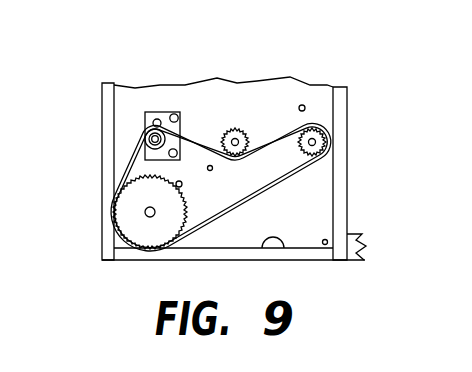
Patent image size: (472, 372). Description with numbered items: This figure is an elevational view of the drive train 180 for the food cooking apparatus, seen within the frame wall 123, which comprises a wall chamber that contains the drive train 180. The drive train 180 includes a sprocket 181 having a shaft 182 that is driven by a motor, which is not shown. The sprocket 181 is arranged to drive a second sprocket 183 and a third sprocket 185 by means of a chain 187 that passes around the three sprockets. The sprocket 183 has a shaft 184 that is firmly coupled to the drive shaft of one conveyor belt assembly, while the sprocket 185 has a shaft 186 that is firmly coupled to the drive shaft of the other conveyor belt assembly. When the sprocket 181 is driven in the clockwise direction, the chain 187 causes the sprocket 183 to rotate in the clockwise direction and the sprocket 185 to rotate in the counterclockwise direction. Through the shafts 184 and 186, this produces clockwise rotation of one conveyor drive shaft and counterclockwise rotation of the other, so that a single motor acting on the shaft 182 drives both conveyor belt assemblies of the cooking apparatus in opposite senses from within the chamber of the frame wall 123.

The frame wall 123 is at (101, 183).
The drive train 180 is at (202, 108).
The sprocket 181 is at (128, 210).
The shaft 182 is at (150, 217).
The sprocket 183 is at (233, 138).
The shaft 184 is at (237, 138).
The sprocket 185 is at (314, 124).
The shaft 186 is at (318, 142).
The chain 187 is at (131, 163).